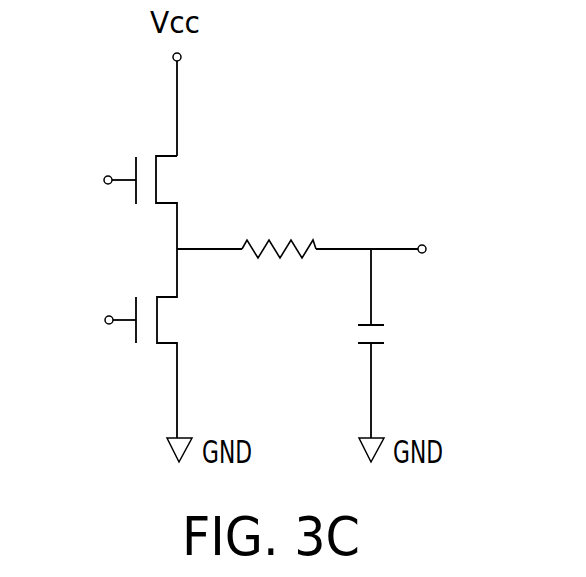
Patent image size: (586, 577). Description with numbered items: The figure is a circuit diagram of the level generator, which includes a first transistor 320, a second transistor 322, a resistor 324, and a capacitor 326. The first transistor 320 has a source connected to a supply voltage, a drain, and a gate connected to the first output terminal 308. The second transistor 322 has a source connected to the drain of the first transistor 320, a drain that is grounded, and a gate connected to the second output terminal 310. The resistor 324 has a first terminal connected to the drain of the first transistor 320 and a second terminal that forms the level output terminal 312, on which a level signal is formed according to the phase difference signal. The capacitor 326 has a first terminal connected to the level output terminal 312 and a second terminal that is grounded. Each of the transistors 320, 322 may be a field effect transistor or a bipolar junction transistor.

The first output terminal 308 is at (122, 176).
The second output terminal 310 is at (124, 317).
The level output terminal 312 is at (395, 242).
The first transistor 320 is at (175, 179).
The second transistor 322 is at (175, 320).
The resistor 324 is at (287, 236).
The capacitor 326 is at (377, 335).